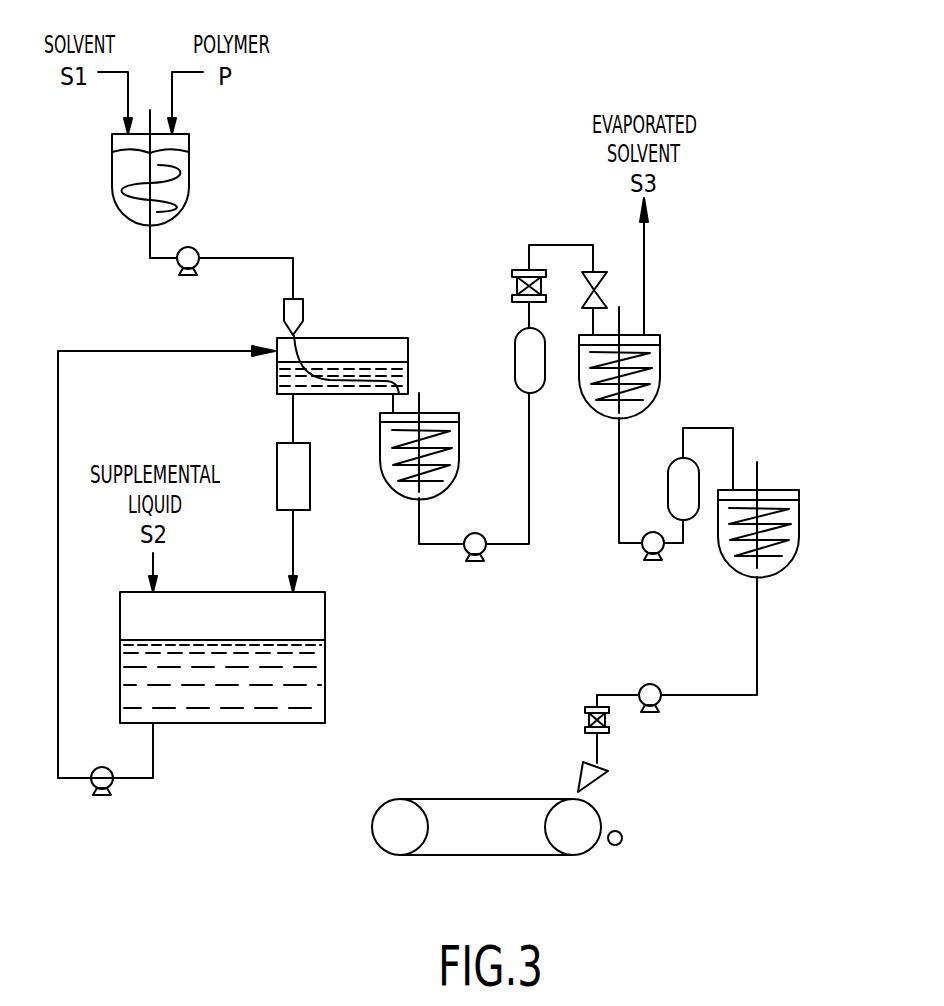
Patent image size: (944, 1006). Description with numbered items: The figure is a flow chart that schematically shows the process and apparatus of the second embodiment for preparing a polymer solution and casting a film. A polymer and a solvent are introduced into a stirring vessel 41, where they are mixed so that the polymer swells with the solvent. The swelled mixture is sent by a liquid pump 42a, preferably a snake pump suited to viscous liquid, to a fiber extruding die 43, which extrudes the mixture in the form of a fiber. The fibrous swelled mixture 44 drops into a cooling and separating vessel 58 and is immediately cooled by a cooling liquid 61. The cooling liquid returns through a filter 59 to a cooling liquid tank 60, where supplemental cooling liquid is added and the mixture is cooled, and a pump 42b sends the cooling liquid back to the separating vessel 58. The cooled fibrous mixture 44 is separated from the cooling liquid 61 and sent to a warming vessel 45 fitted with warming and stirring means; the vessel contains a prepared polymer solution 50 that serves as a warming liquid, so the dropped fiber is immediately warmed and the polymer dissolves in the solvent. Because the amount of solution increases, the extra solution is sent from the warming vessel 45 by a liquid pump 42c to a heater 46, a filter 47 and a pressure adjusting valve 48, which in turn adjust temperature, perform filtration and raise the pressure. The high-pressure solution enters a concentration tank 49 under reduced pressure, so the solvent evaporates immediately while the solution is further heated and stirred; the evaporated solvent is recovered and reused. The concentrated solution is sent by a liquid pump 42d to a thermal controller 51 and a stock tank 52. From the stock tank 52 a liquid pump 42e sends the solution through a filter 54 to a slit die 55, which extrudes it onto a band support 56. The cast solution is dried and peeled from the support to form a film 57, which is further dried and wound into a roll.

The stirring vessel 41 is at (190, 164).
The liquid pump 42a is at (193, 249).
The pump 42b is at (112, 786).
The liquid pump 42c is at (484, 553).
The liquid pump 42d is at (661, 549).
The liquid pump 42e is at (661, 700).
The fiber extruding die 43 is at (303, 310).
The fibrous swelled mixture 44 is at (337, 383).
The warming vessel 45 is at (460, 466).
The heater 46 is at (515, 356).
The filter 47 is at (515, 272).
The pressure adjusting valve 48 is at (597, 272).
The concentration tank 49 is at (660, 360).
The polymer solution 50 is at (410, 491).
The thermal controller 51 is at (699, 470).
The stock tank 52 is at (826, 489).
The filter 54 is at (609, 713).
The slit die 55 is at (606, 790).
The band support 56 is at (533, 762).
The film 57 is at (622, 832).
The cooling and separating vessel 58 is at (277, 388).
The filter 59 is at (277, 492).
The cooling liquid tank 60 is at (325, 677).
The cooling liquid 61 is at (285, 372).